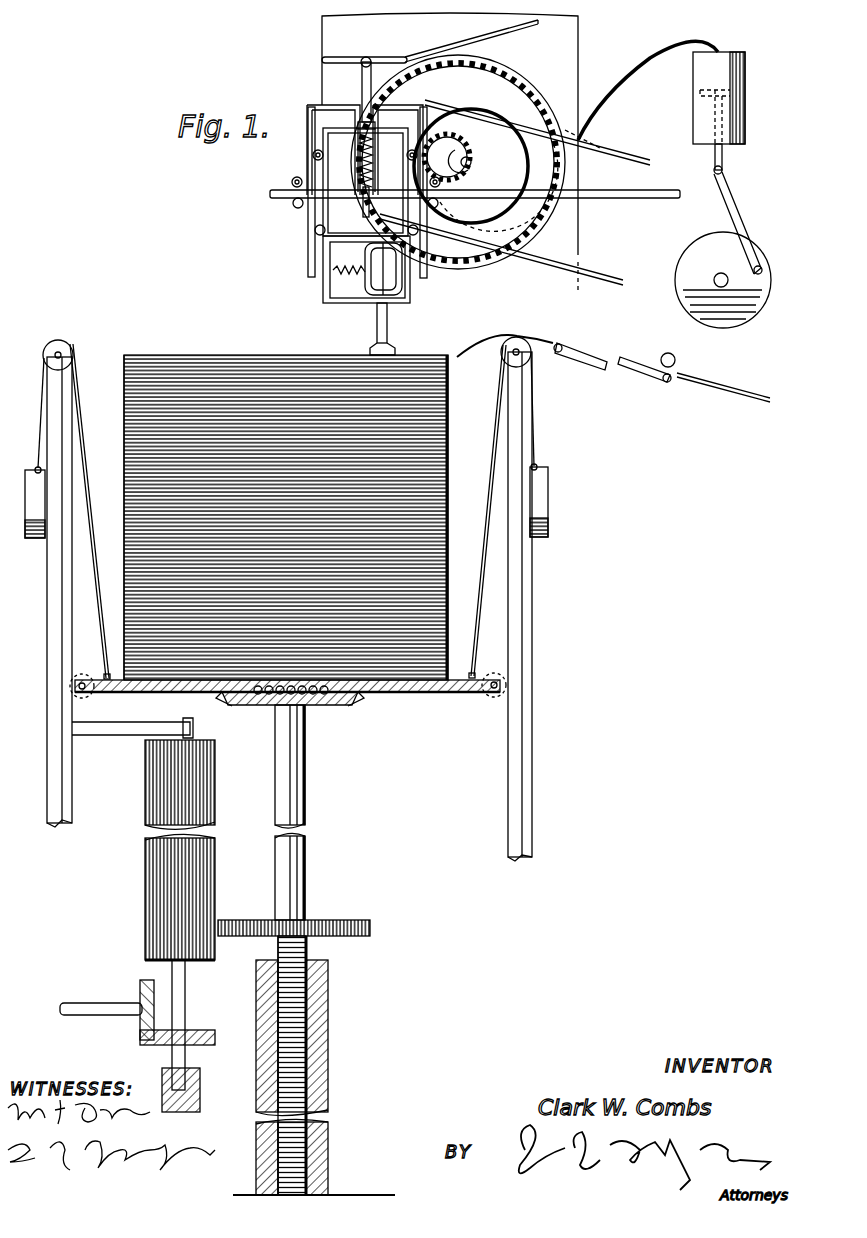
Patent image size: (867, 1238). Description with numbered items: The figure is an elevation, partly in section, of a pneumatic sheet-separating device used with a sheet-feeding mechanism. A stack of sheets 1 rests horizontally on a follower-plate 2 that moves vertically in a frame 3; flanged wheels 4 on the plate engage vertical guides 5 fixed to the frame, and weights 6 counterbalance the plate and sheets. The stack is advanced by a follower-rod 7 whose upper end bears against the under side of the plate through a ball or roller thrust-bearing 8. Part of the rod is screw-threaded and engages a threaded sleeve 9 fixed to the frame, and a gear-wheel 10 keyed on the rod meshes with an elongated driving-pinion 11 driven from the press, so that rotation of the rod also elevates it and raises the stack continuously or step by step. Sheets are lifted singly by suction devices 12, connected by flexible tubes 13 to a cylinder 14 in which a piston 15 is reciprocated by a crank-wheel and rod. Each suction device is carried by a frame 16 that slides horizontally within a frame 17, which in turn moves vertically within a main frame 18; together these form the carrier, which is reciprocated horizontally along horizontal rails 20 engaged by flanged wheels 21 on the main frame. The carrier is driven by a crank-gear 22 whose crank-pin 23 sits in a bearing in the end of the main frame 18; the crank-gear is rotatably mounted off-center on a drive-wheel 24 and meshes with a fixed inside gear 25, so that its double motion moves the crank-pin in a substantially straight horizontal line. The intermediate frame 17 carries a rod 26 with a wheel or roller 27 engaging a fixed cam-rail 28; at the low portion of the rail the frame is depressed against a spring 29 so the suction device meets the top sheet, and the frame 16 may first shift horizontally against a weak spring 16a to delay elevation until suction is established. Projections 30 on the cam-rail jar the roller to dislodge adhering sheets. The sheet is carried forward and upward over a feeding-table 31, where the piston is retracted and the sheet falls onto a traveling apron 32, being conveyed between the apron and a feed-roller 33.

The stack of sheets 1 is at (243, 366).
The follower-plate 2 is at (287, 696).
The frame 3 is at (290, 609).
The flanged wheels 4 is at (90, 676).
The vertical guides 5 is at (68, 636).
The weights 6 is at (27, 512).
The follower-rod 7 is at (300, 812).
The ball or roller thrust-bearing 8 is at (318, 704).
The threaded sleeve 9 is at (330, 1040).
The gear-wheel 10 is at (294, 914).
The elongated driving-pinion 11 is at (210, 860).
The suction devices 12 is at (388, 318).
The flexible tubes 13 is at (604, 112).
The cylinder 14 is at (750, 100).
The piston 15 is at (727, 96).
The frame 16 is at (368, 280).
The spring 16a is at (356, 272).
The frame 17 is at (324, 295).
The main frame 18 is at (312, 252).
The horizontal rails 20 is at (272, 194).
The flanged wheels 21 is at (296, 206).
The crank-gear 22 is at (450, 140).
The crank-pin 23 is at (365, 170).
The drive-wheel 24 is at (458, 162).
The inside gear 25 is at (515, 192).
The rod 26 is at (380, 76).
The wheel or roller 27 is at (364, 47).
The cam-rail 28 is at (475, 42).
The spring 29 is at (360, 153).
The projections 30 is at (407, 58).
The feeding-table 31 is at (526, 343).
The traveling apron 32 is at (612, 354).
The feed-roller 33 is at (681, 353).